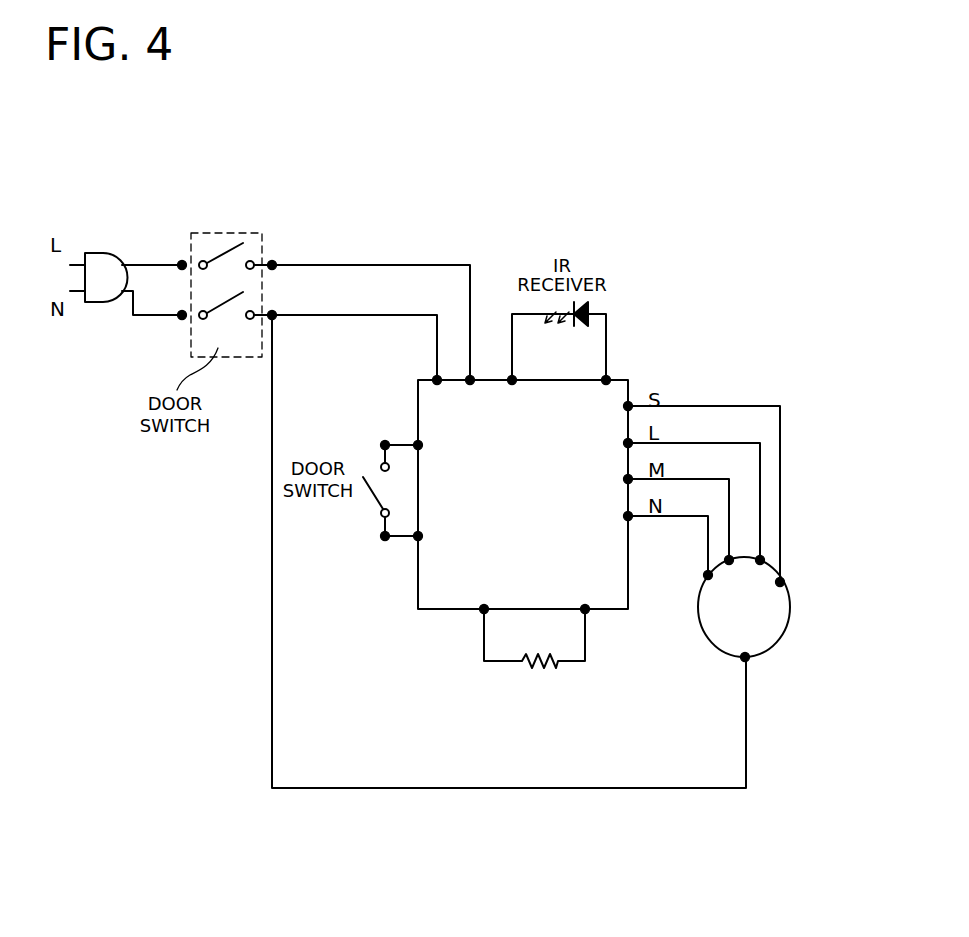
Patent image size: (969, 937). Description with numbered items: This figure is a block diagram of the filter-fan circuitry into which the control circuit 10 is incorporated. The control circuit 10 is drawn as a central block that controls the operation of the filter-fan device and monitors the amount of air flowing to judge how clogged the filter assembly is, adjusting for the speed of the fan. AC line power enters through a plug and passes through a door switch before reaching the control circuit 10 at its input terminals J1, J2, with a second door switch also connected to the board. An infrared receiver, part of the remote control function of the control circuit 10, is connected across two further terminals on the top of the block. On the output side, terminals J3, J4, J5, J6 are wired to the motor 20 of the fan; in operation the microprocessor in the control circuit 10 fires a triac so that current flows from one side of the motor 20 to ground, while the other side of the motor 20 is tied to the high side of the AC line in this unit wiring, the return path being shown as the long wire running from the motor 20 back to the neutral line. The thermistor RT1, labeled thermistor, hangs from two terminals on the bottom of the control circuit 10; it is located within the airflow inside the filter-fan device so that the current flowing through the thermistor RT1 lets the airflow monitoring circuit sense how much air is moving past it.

The control circuit 10 is at (537, 542).
The motor 20 is at (787, 628).
The connector terminal J1 is at (435, 397).
The connector terminal J2 is at (466, 397).
The connector terminal J3 is at (611, 415).
The connector terminal J4 is at (611, 449).
The connector terminal J5 is at (611, 485).
The connector terminal J6 is at (611, 522).
The thermistor RT1 is at (534, 650).